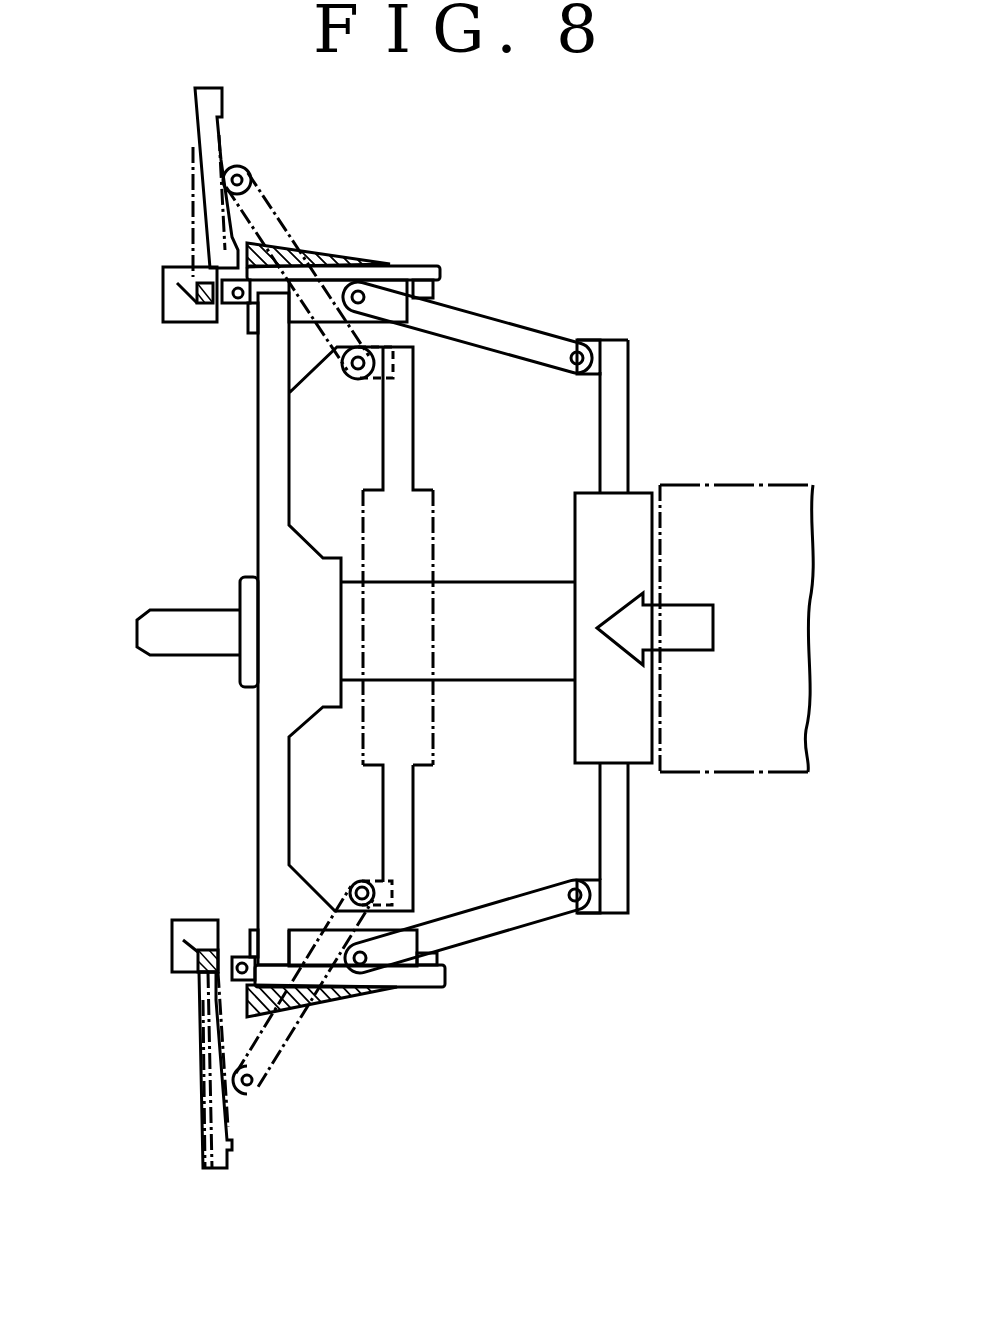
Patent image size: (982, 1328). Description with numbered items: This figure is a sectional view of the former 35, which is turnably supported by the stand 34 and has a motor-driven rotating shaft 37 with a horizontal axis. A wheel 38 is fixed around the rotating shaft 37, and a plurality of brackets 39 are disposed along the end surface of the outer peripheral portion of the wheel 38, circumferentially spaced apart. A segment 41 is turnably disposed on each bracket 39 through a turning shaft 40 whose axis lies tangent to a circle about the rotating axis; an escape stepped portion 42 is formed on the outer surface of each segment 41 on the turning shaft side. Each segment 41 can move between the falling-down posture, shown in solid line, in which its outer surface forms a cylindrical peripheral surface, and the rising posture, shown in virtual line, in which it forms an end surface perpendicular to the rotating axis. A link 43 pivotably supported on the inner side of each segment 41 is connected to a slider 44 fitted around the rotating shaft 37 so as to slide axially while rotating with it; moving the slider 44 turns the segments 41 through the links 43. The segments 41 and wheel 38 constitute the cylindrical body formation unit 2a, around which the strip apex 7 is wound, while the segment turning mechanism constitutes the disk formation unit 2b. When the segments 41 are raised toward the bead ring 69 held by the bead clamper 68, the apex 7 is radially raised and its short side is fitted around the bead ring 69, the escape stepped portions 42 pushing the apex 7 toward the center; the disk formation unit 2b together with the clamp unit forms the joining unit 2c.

The cylindrical body formation unit 2a is at (423, 248).
The disk formation unit 2b is at (502, 955).
The joining unit 2c is at (163, 1105).
The strip apex 7 is at (312, 262).
The stand 34 is at (795, 775).
The former 35 is at (614, 316).
The rotating shaft 37 is at (483, 583).
The wheel 38 is at (258, 758).
The bracket 39 is at (251, 334).
The turning shaft 40 is at (240, 304).
The segment 41 is at (441, 270).
The escape stepped portion 42 is at (232, 240).
The link 43 is at (497, 327).
The slider 44 is at (617, 413).
The bead clamper 68 is at (183, 940).
The bead ring 69 is at (198, 954).